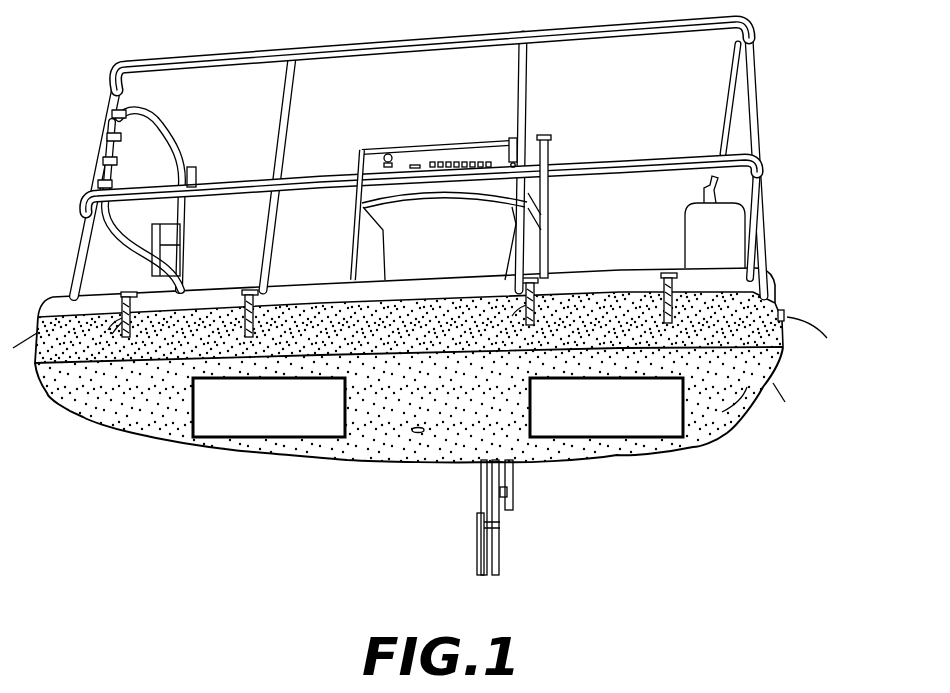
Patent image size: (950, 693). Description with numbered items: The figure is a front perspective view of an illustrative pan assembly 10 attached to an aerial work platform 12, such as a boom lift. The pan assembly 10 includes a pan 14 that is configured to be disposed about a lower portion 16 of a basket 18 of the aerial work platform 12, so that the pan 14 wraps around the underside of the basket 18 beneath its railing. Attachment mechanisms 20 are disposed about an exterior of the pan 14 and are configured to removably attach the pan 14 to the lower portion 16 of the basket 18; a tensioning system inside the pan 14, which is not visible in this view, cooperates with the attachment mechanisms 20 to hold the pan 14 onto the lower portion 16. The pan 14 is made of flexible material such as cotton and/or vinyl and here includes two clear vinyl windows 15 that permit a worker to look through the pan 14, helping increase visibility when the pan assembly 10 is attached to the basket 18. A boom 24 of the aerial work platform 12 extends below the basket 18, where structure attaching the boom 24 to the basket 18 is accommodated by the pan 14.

The pan assembly 10 is at (469, 421).
The aerial work platform 12 is at (469, 314).
The pan 14 is at (790, 362).
The vinyl window 15 is at (303, 444).
The lower portion 16 is at (793, 300).
The basket 18 is at (793, 157).
The attachment mechanisms 20 is at (121, 307).
The boom 24 is at (461, 488).